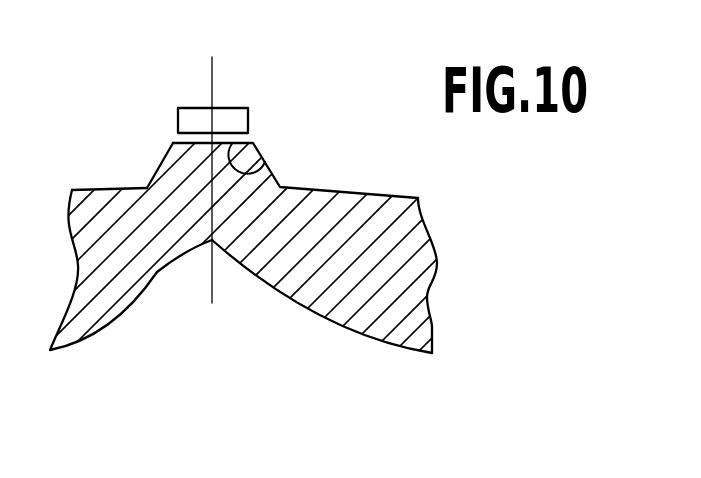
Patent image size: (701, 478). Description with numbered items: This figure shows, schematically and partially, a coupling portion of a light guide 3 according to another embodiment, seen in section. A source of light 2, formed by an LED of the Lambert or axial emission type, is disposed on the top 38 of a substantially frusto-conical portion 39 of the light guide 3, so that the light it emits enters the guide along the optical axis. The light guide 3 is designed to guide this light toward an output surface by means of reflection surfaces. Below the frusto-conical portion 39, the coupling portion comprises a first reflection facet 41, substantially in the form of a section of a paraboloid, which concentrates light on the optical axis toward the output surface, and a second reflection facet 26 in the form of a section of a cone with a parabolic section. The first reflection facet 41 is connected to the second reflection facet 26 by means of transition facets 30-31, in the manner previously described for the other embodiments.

The source of light 2 is at (233, 118).
The light guide 3 is at (393, 228).
The second reflection facet 26 is at (283, 302).
The transition facets 30-31 is at (178, 253).
The top 38 is at (265, 168).
The frusto-conical portion 39 is at (155, 170).
The first reflection facet 41 is at (100, 327).